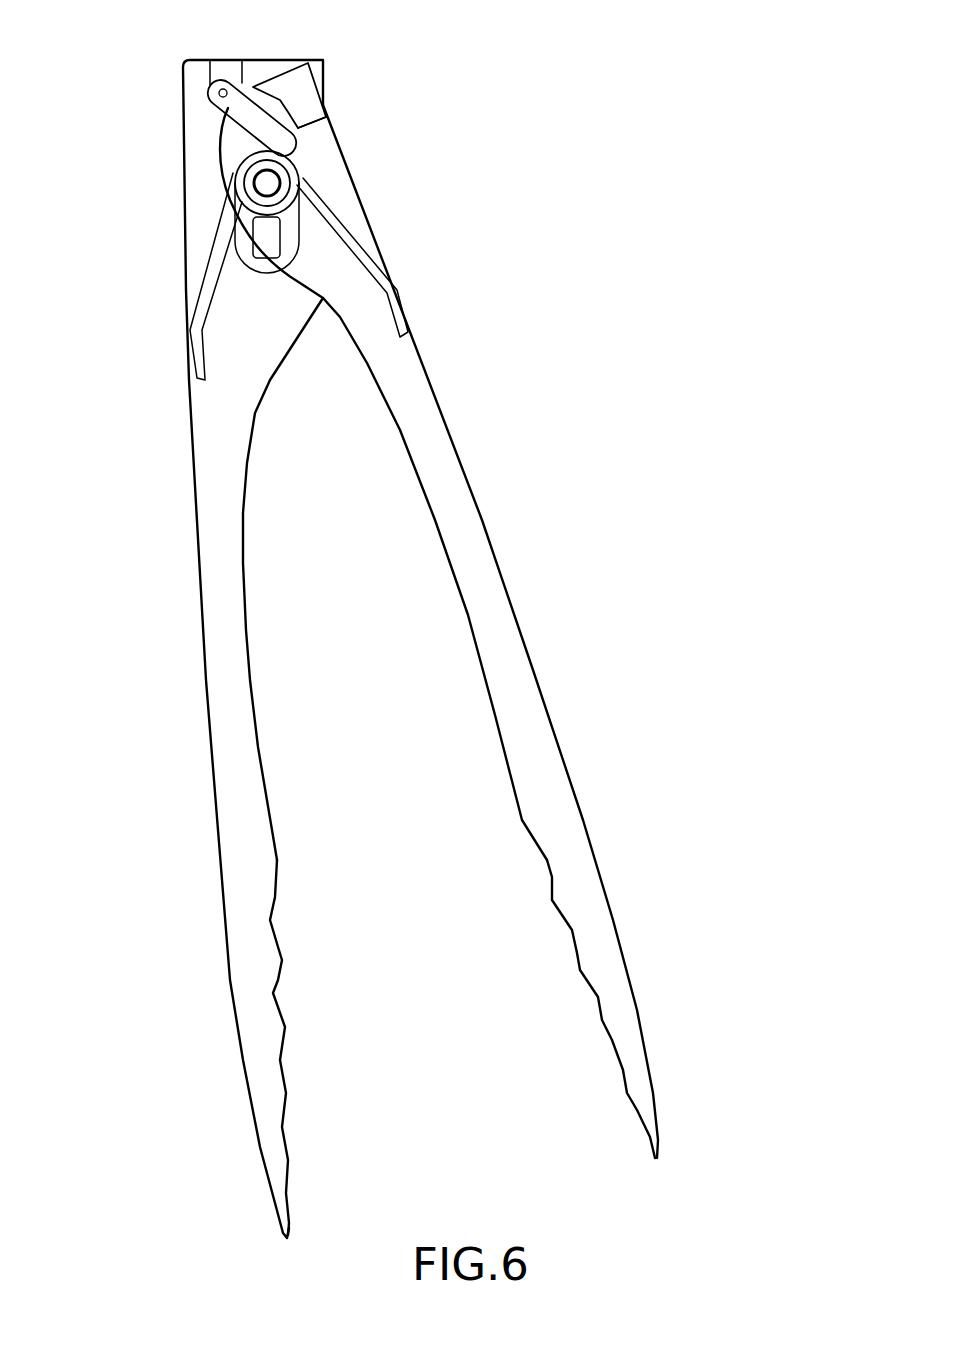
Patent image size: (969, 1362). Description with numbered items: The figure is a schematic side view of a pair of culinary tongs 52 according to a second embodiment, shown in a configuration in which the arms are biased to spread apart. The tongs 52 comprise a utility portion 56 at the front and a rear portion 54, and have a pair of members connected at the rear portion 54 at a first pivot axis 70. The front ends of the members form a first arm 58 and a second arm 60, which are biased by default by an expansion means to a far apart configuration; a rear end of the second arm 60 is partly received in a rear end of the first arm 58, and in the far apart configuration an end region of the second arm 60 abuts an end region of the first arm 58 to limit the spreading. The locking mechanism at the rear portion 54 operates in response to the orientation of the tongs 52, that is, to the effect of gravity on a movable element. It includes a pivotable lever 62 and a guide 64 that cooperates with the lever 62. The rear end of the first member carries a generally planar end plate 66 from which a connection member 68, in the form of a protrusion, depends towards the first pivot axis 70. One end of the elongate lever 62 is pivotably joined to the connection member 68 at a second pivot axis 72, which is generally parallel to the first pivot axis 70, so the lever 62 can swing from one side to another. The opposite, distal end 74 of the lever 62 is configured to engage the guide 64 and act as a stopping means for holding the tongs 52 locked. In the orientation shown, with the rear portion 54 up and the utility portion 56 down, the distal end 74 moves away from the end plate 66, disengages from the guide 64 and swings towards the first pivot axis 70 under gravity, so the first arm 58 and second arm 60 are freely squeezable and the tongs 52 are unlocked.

The tongs 52 is at (580, 483).
The rear portion 54 is at (610, 43).
The utility portion 56 is at (567, 1002).
The first arm 58 is at (235, 743).
The second arm 60 is at (527, 765).
The lever 62 is at (285, 130).
The guide 64 is at (303, 92).
The end plate 66 is at (258, 58).
The connection member 68 is at (222, 73).
The first pivot axis 70 is at (267, 183).
The second pivot axis 72 is at (219, 95).
The distal end 74 is at (297, 140).